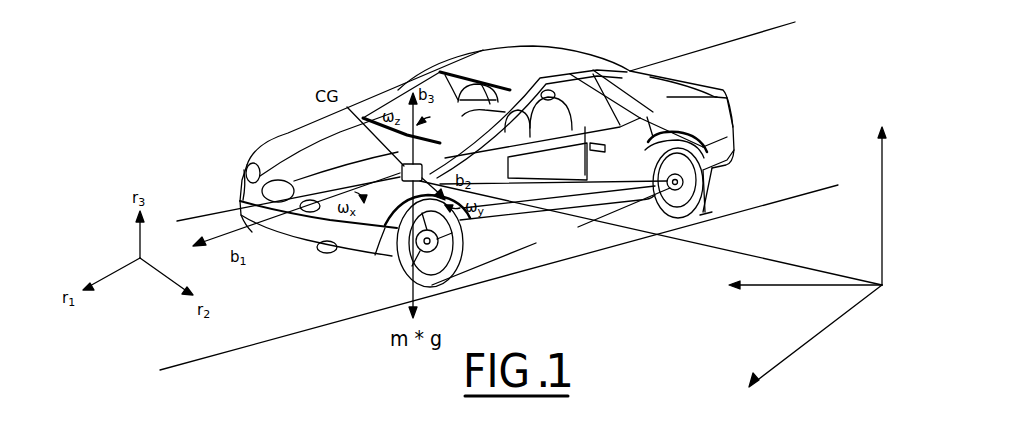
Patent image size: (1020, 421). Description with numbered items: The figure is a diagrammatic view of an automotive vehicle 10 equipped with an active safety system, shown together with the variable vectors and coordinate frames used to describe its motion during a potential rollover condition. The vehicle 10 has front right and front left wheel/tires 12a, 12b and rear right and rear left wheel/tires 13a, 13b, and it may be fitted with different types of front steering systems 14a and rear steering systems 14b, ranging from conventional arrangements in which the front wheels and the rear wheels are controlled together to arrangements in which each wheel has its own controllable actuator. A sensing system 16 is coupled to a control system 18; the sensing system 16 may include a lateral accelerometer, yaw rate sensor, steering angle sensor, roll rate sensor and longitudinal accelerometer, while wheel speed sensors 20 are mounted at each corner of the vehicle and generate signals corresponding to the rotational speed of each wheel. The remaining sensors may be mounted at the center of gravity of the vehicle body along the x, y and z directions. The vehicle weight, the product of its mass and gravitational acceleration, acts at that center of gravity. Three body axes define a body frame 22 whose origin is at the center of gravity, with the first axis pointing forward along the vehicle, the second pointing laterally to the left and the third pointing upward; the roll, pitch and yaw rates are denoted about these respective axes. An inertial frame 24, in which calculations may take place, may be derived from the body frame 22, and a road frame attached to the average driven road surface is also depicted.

The automotive vehicle 10 is at (517, 57).
The front right wheel/tire 12a is at (241, 165).
The front left wheel/tire 12b is at (440, 288).
The rear right wheel/tire 13a is at (545, 100).
The rear left wheel/tire 13b is at (702, 192).
The front steering system 14a is at (380, 250).
The rear steering system 14b is at (617, 170).
The sensing system 16 is at (451, 100).
The control system 18 is at (602, 68).
The wheel speed sensors 20 is at (521, 196).
The body frame 22 is at (220, 237).
The inertial frame 24 is at (882, 288).